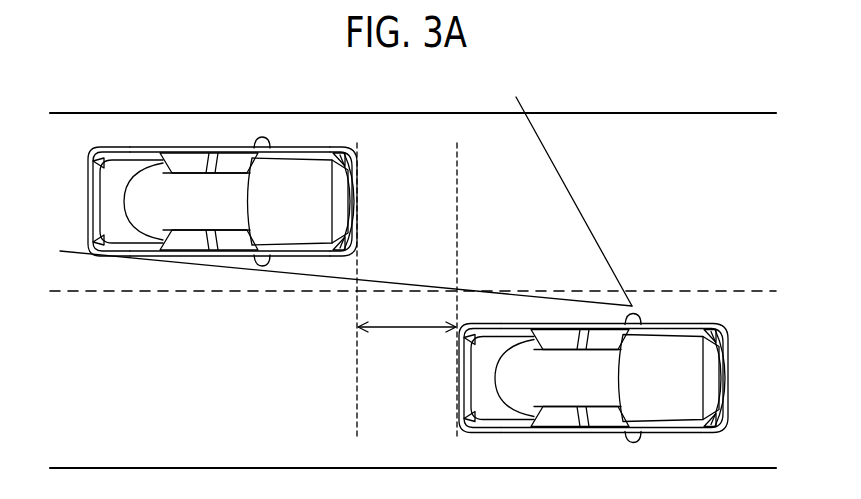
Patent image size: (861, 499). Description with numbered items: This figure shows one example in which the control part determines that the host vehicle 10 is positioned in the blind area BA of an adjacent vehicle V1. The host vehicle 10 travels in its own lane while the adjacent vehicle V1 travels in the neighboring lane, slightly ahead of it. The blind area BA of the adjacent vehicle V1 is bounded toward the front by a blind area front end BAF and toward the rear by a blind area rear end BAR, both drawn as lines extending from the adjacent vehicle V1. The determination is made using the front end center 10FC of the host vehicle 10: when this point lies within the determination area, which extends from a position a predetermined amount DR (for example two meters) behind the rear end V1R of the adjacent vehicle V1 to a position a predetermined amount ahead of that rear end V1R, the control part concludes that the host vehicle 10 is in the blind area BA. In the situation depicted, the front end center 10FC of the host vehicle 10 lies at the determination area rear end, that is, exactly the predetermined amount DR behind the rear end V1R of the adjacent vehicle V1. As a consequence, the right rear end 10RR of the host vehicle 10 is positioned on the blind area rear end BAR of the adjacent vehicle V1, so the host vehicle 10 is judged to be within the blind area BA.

The host vehicle 10 is at (251, 209).
The front end center of host vehicle 10FC is at (362, 194).
The right rear end of host vehicle 10RR is at (98, 256).
The blind area BA is at (338, 201).
The blind area front end BAF is at (540, 138).
The blind area rear end BAR is at (72, 250).
The predetermined amount DR is at (407, 314).
The adjacent vehicle V1 is at (583, 378).
The rear end of adjacent vehicle V1R is at (456, 380).